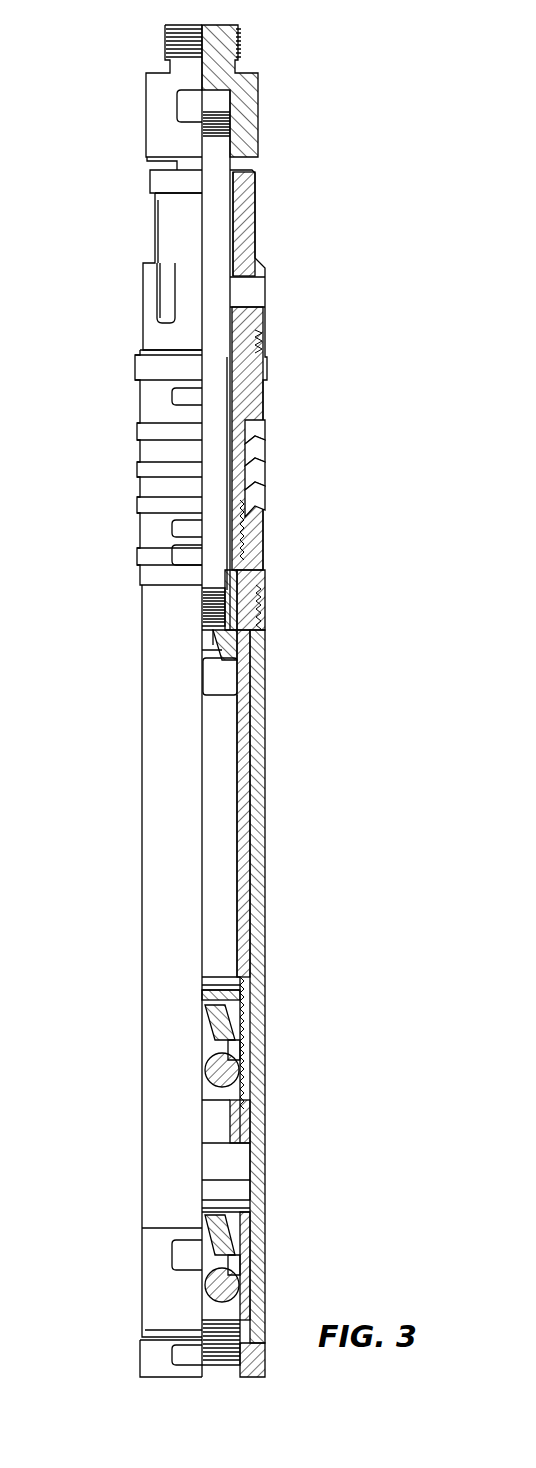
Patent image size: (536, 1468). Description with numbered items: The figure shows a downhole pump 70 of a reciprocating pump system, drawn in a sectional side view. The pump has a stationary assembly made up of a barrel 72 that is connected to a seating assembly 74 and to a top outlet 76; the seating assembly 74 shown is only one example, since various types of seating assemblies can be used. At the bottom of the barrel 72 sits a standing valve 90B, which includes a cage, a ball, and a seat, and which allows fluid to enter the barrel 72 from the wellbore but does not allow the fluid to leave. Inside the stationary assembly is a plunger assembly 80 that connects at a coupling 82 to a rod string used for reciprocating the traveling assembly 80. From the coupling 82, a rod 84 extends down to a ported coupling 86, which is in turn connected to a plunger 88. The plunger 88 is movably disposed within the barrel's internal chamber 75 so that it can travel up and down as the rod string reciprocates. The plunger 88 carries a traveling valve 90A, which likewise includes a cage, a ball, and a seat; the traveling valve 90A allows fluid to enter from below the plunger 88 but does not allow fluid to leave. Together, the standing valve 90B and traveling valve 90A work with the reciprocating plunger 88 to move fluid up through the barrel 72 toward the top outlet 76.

The downhole pump 70 is at (292, 80).
The barrel 72 is at (126, 759).
The seating assembly 74 is at (137, 466).
The internal chamber 75 is at (245, 768).
The top outlet 76 is at (143, 307).
The plunger assembly 80 is at (116, 118).
The coupling 82 is at (257, 112).
The rod 84 is at (233, 305).
The ported coupling 86 is at (238, 676).
The plunger 88 is at (246, 846).
The traveling valve 90A is at (268, 1041).
The standing valve 90B is at (284, 1272).